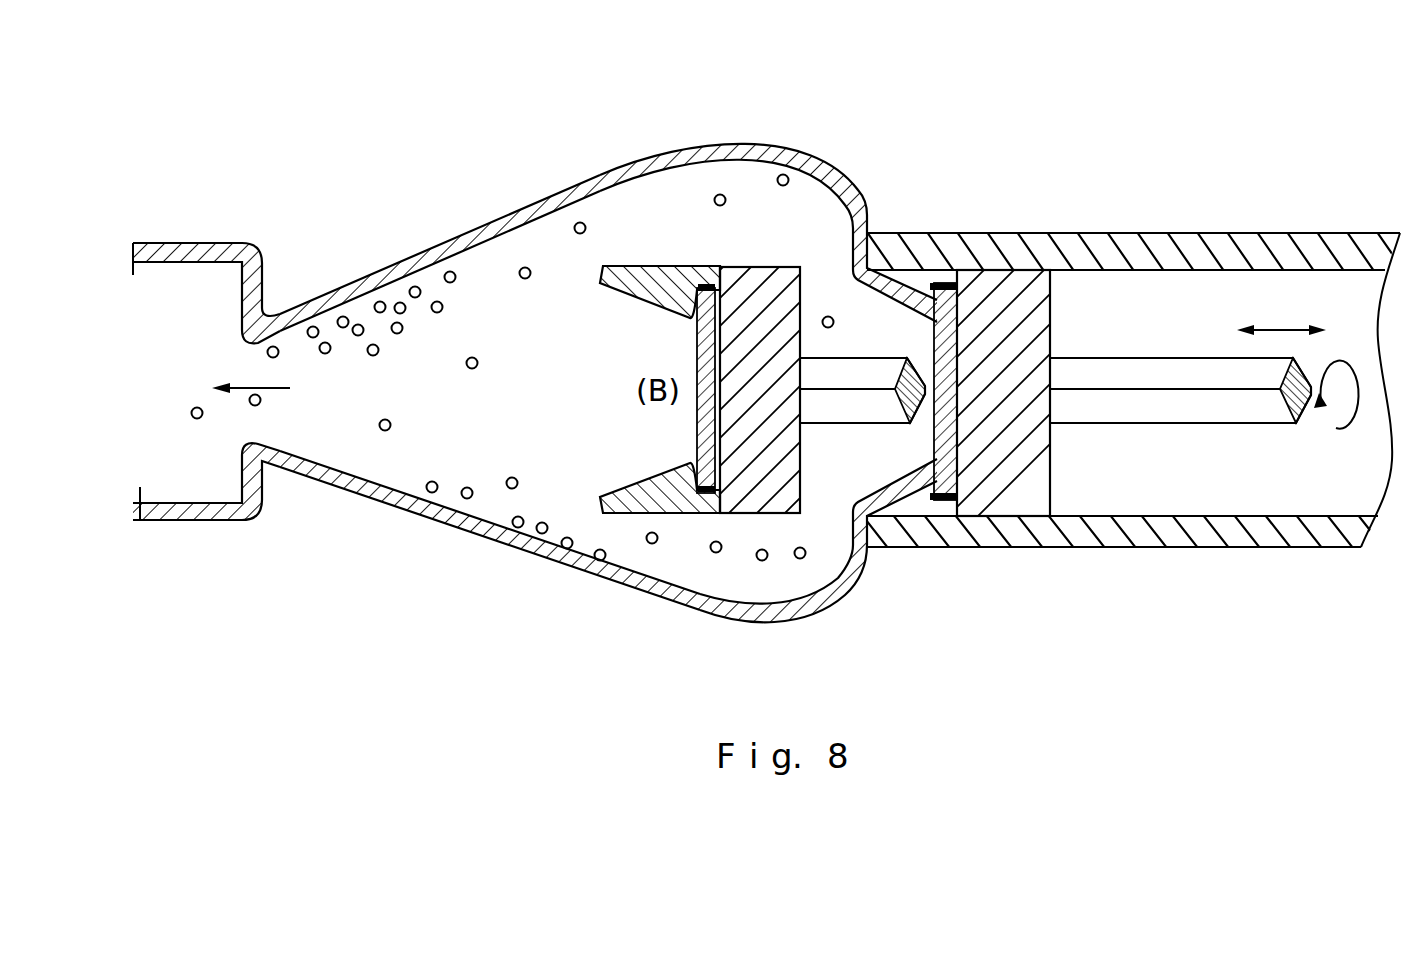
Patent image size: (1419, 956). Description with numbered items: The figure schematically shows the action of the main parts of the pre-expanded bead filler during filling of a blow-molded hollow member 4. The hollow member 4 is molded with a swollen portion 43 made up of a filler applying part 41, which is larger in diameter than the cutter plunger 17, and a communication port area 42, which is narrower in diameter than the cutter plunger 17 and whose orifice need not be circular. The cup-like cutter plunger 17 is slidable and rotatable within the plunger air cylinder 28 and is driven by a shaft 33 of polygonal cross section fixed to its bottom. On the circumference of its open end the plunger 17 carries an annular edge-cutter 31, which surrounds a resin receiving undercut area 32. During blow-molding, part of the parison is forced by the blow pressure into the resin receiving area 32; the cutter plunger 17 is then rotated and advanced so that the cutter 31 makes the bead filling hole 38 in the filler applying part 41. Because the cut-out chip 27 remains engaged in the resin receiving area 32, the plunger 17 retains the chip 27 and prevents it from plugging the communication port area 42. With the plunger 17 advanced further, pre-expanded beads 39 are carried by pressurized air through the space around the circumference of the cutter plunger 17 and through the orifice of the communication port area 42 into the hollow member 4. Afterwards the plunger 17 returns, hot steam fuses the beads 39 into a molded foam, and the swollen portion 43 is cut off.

The hollow member 4 is at (175, 245).
The cutter plunger 17 is at (781, 522).
The chip 27 is at (715, 385).
The plunger air cylinder 28 is at (1305, 238).
The edge-cutter 31 is at (755, 149).
The resin receiving undercut area 32 is at (866, 236).
The shaft 33 is at (1241, 405).
The bead filling hole 38 is at (713, 285).
The pre-expanded beads 39 is at (378, 433).
The filler applying part 41 is at (850, 577).
The communication port area 42 is at (260, 418).
The swollen portion 43 is at (572, 182).